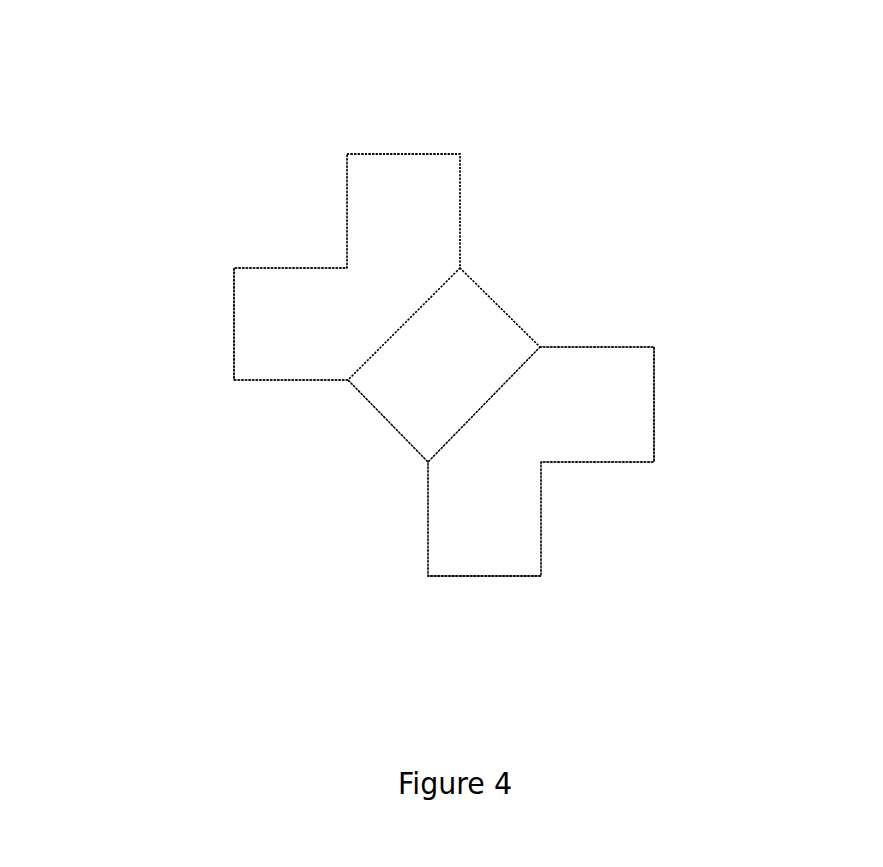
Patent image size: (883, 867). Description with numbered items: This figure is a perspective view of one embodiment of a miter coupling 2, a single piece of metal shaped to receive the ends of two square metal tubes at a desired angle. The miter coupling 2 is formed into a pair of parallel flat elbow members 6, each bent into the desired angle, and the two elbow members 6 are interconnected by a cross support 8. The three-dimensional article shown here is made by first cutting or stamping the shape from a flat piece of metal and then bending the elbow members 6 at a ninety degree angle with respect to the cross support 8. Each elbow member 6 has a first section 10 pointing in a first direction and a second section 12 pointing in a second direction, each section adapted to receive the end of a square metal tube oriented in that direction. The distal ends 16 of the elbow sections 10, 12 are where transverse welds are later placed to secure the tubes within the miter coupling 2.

The miter coupling 2 is at (564, 158).
The elbow members 6 is at (377, 295).
The cross support 8 is at (452, 357).
The first section 10 is at (399, 187).
The second section 12 is at (277, 315).
The distal ends 16 is at (377, 154).